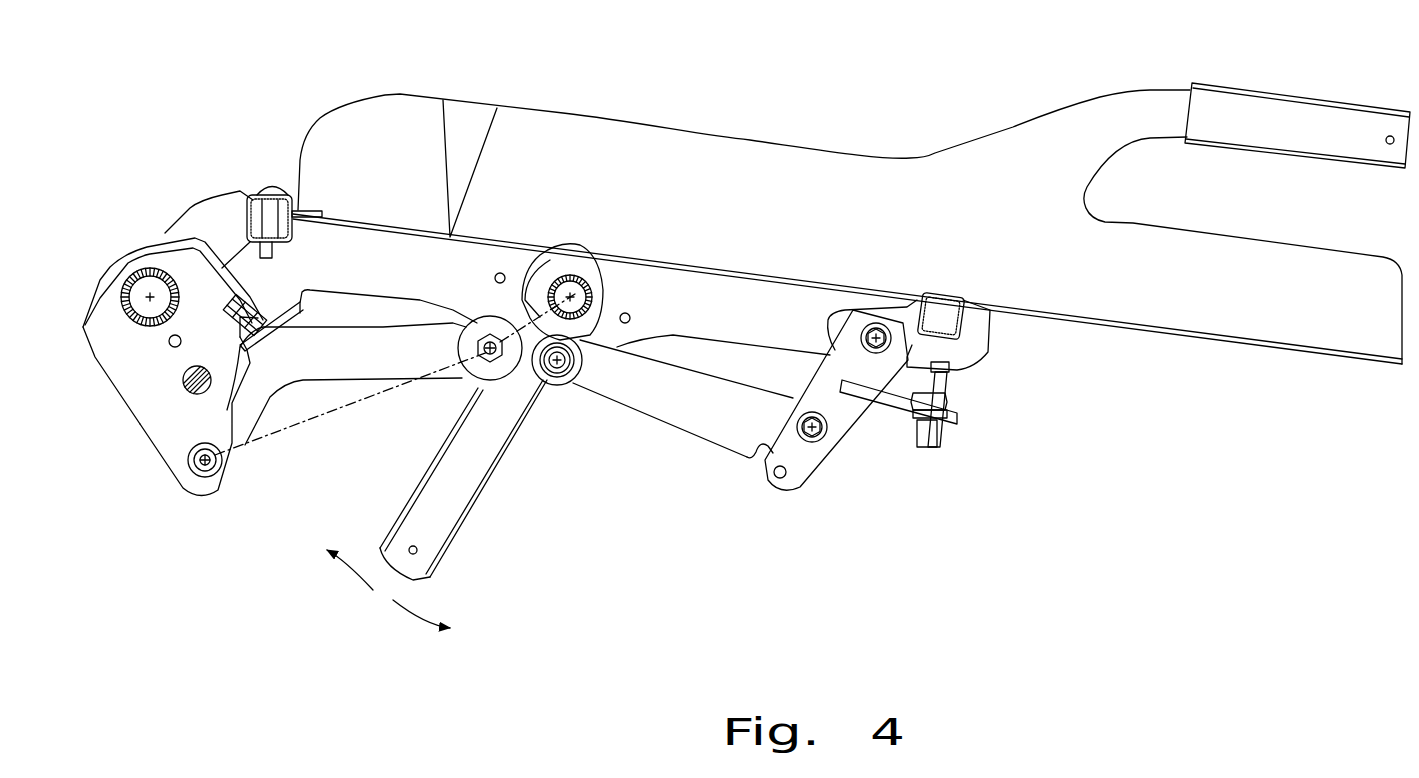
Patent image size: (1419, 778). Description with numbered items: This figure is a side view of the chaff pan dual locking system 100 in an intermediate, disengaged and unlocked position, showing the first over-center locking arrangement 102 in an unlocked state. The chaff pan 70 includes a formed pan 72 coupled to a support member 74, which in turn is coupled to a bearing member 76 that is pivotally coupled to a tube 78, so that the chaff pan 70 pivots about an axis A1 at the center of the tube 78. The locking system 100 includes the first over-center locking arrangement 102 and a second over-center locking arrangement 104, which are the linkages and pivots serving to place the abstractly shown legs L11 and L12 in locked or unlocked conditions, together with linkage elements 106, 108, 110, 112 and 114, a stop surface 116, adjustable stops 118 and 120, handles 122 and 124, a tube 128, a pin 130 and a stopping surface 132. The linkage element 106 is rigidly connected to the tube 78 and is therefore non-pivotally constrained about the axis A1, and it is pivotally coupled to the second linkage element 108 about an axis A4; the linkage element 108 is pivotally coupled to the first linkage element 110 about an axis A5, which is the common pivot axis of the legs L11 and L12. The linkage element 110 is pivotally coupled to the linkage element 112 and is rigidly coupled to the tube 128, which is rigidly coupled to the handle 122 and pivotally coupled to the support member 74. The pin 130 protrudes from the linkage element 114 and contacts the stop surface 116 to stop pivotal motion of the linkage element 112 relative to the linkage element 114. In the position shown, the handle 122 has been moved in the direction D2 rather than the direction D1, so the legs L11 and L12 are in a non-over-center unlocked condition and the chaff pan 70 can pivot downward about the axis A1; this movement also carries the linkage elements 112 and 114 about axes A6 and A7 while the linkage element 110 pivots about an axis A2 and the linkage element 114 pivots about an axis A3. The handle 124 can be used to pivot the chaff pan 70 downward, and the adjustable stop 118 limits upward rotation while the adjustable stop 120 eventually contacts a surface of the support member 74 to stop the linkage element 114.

The chaff pan 70 is at (862, 97).
The formed pan 72 is at (1273, 348).
The support member 74 is at (988, 350).
The bearing member 76 is at (120, 263).
The tube 78 is at (100, 356).
The chaff pan dual locking system 100 is at (978, 534).
The first over-center locking arrangement 102 is at (486, 602).
The second over-center locking arrangement 104 is at (640, 500).
The linkage element 106 is at (138, 436).
The second linkage element 108 is at (353, 367).
The first linkage element 110 is at (484, 393).
The second linkage element 112 is at (657, 392).
The linkage element 114 is at (806, 474).
The stop surface 116 is at (760, 442).
The adjustable stop 118 is at (253, 302).
The adjustable stop 120 is at (958, 392).
The handle 122 is at (462, 535).
The handle 124 is at (1341, 100).
The tube 128 is at (603, 300).
The pin 130 is at (777, 487).
The stopping surface 132 is at (385, 325).
The axis A1 is at (150, 297).
The axis A2 is at (577, 290).
The axis A3 is at (873, 337).
The axis A4 is at (206, 466).
The axis A5 is at (478, 348).
The axis A6 is at (559, 368).
The axis A7 is at (812, 428).
The leg L11 is at (297, 427).
The leg L12 is at (525, 330).
The direction D1 is at (350, 578).
The direction D2 is at (417, 622).